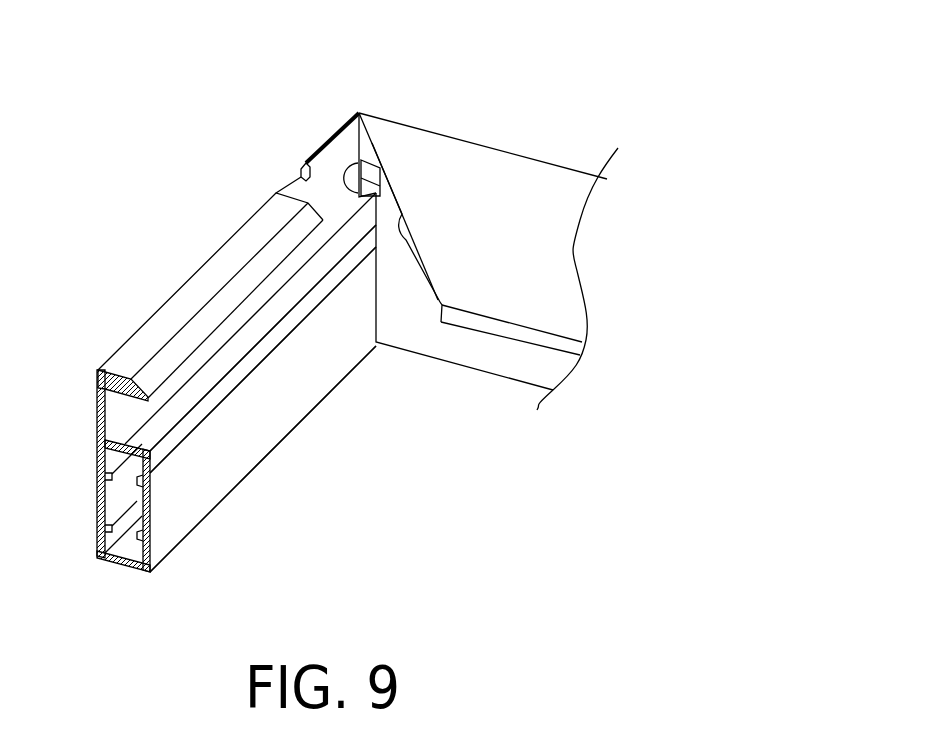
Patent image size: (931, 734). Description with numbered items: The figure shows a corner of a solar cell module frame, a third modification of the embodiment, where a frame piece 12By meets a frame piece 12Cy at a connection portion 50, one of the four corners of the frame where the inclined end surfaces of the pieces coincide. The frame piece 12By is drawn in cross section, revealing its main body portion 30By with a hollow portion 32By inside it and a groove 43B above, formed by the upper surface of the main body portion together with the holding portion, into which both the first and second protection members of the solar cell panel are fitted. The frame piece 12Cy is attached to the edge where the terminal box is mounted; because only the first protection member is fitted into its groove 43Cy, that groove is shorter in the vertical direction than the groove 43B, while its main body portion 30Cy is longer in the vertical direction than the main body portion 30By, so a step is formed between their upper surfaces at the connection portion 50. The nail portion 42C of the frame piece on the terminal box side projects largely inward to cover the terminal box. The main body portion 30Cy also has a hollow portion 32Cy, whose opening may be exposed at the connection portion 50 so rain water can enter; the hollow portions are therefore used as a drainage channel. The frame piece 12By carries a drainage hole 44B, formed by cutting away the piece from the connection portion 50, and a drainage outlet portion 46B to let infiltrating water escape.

The frame piece 12By is at (168, 286).
The frame piece 12Cy is at (536, 146).
The main body portion 30By is at (217, 493).
The main body portion 30Cy is at (406, 343).
The hollow portion 32By is at (127, 547).
The hollow portion 32Cy is at (360, 176).
The nail portion 42C is at (498, 300).
The groove 43B is at (157, 422).
The groove 43Cy is at (382, 166).
The drainage hole 44B is at (353, 175).
The drainage outlet portion 46B is at (298, 188).
The connection portion 50 is at (359, 112).